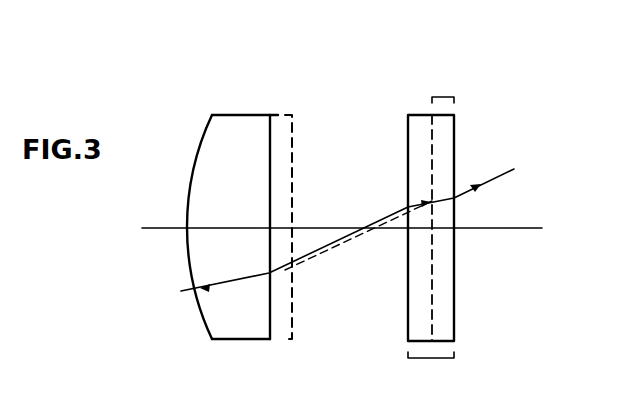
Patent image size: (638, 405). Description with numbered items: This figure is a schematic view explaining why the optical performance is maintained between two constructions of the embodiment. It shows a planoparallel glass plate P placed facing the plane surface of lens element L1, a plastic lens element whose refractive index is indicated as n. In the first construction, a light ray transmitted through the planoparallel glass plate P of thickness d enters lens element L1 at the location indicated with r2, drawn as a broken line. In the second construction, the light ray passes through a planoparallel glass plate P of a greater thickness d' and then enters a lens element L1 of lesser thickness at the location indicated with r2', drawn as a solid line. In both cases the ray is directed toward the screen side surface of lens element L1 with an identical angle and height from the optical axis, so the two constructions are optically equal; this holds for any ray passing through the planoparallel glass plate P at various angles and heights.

The lens element L1 is at (246, 219).
The refractive index of lens n is at (204, 133).
The entry location on lens element of lesser thickness r2' is at (279, 195).
The entry location on lens element r2 is at (310, 200).
The planoparallel glass plate P is at (443, 315).
The thickness of planoparallel glass plate d is at (443, 82).
The greater thickness of planoparallel glass plate d' is at (431, 370).